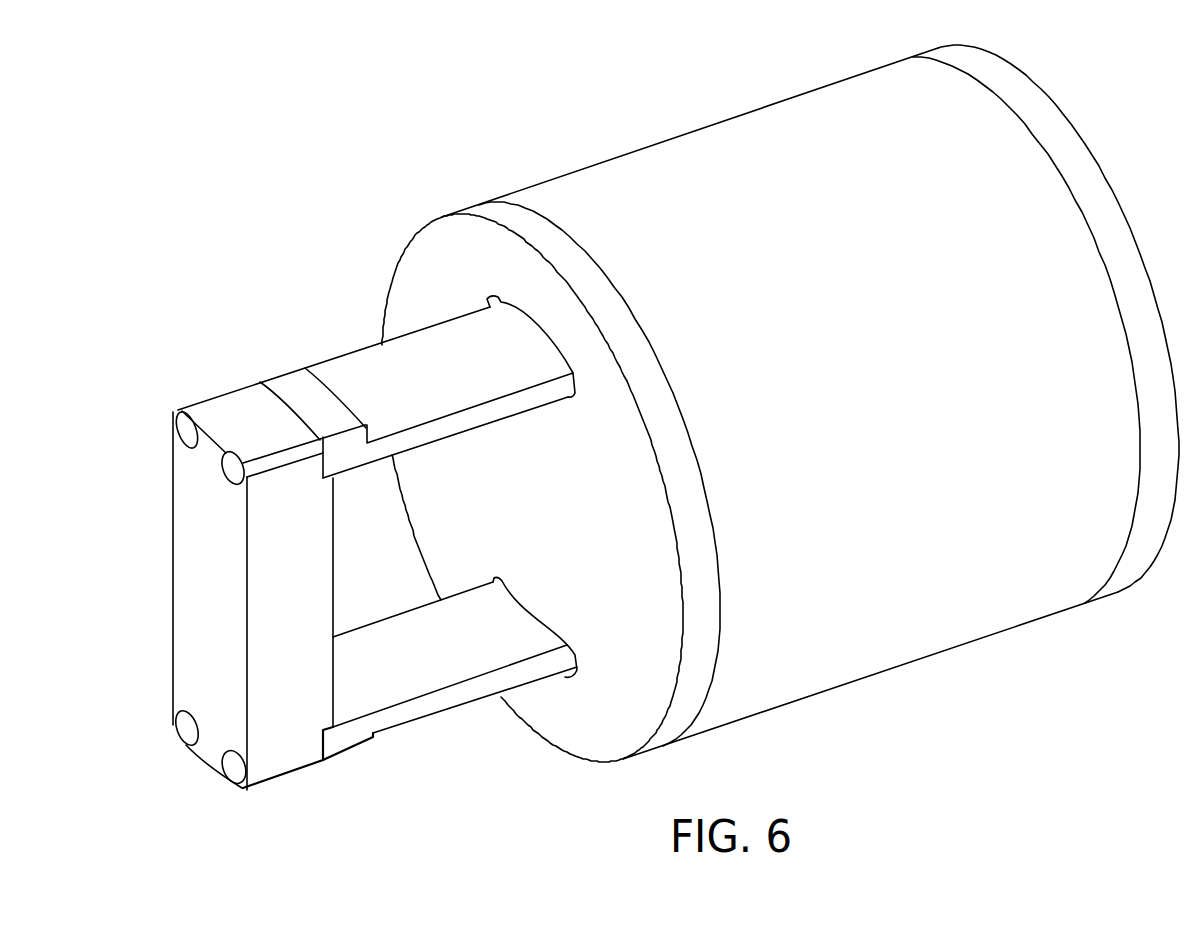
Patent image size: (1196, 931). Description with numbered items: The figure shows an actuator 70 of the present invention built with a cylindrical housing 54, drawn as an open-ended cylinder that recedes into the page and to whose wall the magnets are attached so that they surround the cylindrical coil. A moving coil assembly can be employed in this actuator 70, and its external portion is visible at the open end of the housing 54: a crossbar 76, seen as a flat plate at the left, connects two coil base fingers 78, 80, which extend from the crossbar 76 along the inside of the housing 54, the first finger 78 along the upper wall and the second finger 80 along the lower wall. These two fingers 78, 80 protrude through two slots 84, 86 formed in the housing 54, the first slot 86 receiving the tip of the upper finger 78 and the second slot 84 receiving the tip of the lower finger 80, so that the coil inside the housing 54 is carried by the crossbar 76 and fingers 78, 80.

The housing 54 is at (682, 134).
The actuator 70 is at (410, 42).
The crossbar 76 is at (190, 565).
The coil base finger 78 is at (376, 344).
The coil base finger 80 is at (482, 713).
The slot 84 is at (570, 677).
The slot 86 is at (492, 297).